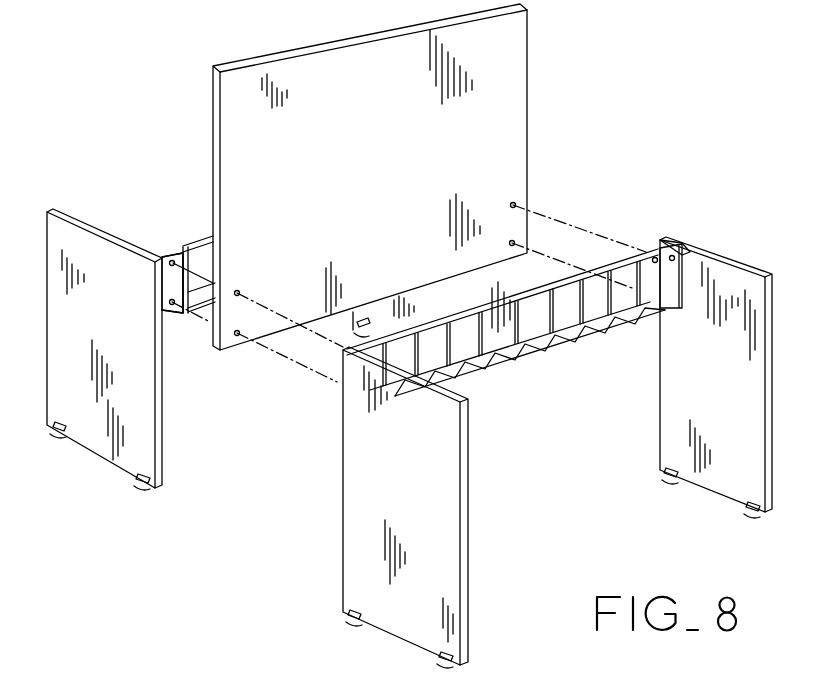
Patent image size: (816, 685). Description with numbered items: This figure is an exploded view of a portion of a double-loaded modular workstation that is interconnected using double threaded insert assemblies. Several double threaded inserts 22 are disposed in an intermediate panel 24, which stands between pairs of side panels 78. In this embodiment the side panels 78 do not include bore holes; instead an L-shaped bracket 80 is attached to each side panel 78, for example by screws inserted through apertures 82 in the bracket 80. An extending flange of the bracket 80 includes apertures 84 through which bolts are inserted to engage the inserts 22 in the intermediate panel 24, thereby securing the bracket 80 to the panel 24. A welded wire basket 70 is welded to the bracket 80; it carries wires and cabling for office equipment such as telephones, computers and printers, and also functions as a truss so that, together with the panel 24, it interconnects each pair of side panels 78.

The double threaded insert 22 is at (237, 292).
The intermediate panel 24 is at (493, 97).
The welded wire basket 70 is at (200, 243).
The side panel 78 is at (107, 442).
The L-shaped bracket 80 is at (165, 283).
The aperture 82 is at (686, 251).
The aperture 84 is at (172, 304).